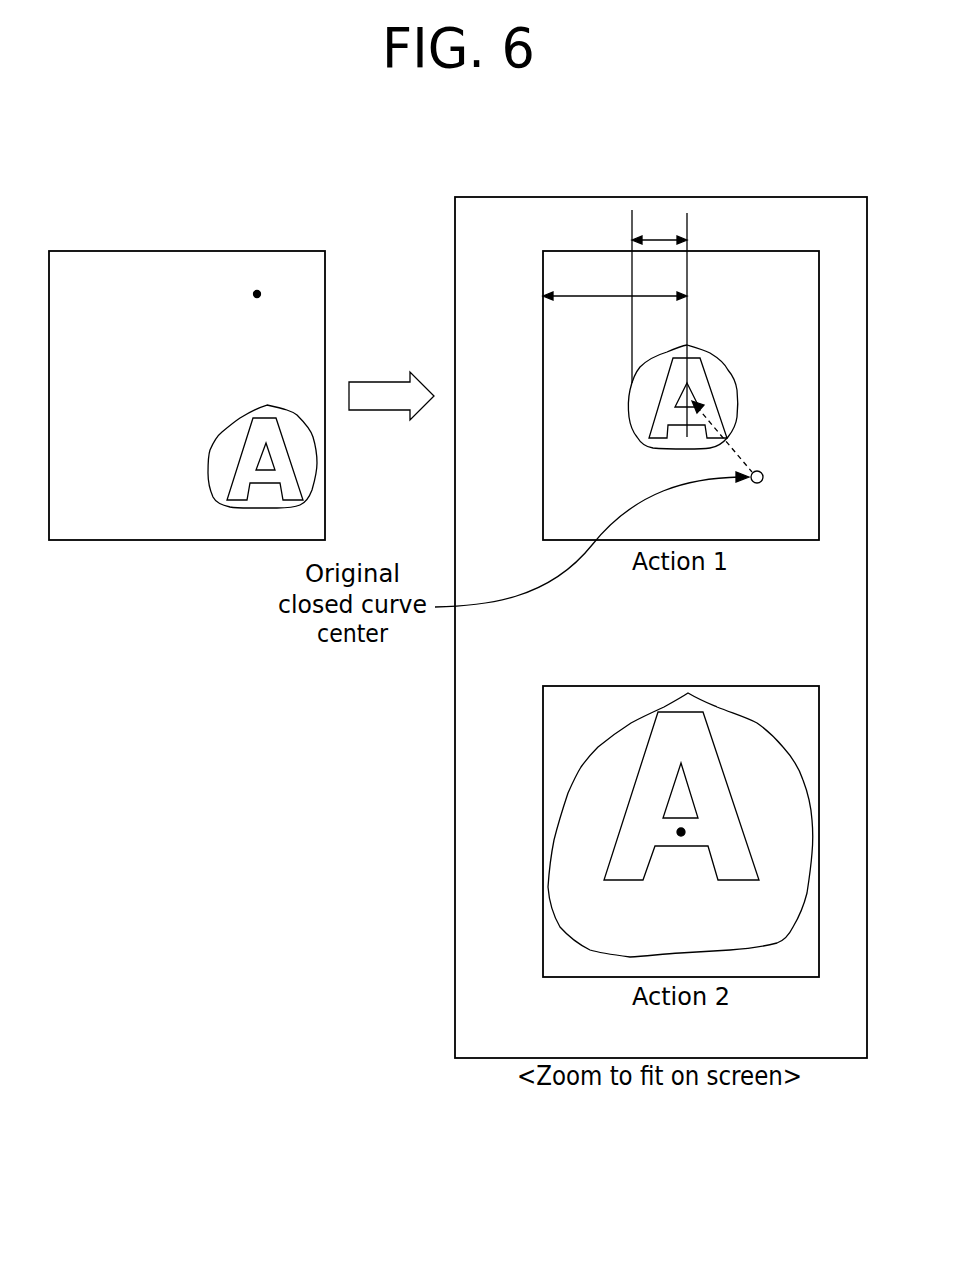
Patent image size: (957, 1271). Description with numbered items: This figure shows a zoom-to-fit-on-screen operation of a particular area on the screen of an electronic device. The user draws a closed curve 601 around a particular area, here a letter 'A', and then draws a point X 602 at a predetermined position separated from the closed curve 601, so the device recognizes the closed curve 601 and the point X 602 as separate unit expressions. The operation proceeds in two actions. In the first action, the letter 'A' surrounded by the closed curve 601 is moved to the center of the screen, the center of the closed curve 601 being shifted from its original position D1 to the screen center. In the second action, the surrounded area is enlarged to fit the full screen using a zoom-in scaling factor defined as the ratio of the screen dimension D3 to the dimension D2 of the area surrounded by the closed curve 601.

The closed curve 601 is at (208, 463).
The point X 602 is at (257, 290).
The original closed curve center D1 is at (731, 457).
The closed curve width dimension D2 is at (659, 226).
The screen width dimension D3 is at (615, 284).